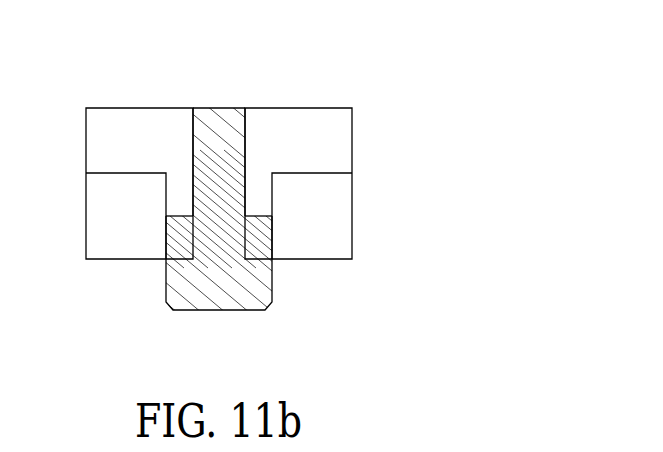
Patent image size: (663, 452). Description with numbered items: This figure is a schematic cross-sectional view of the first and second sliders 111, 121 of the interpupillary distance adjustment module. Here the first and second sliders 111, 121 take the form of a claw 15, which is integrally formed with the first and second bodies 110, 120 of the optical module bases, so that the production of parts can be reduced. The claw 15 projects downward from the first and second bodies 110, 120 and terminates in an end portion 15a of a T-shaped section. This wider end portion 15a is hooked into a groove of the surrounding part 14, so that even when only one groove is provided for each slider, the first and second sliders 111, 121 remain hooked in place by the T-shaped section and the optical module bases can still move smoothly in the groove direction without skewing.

The slide rail 14 is at (121, 242).
The claw 15 is at (224, 195).
The end portion of a T-shaped section 15a is at (247, 287).
The first body 110 is at (298, 153).
The second body 120 is at (307, 125).
The first slider 111 is at (209, 115).
The second slider 121 is at (212, 123).